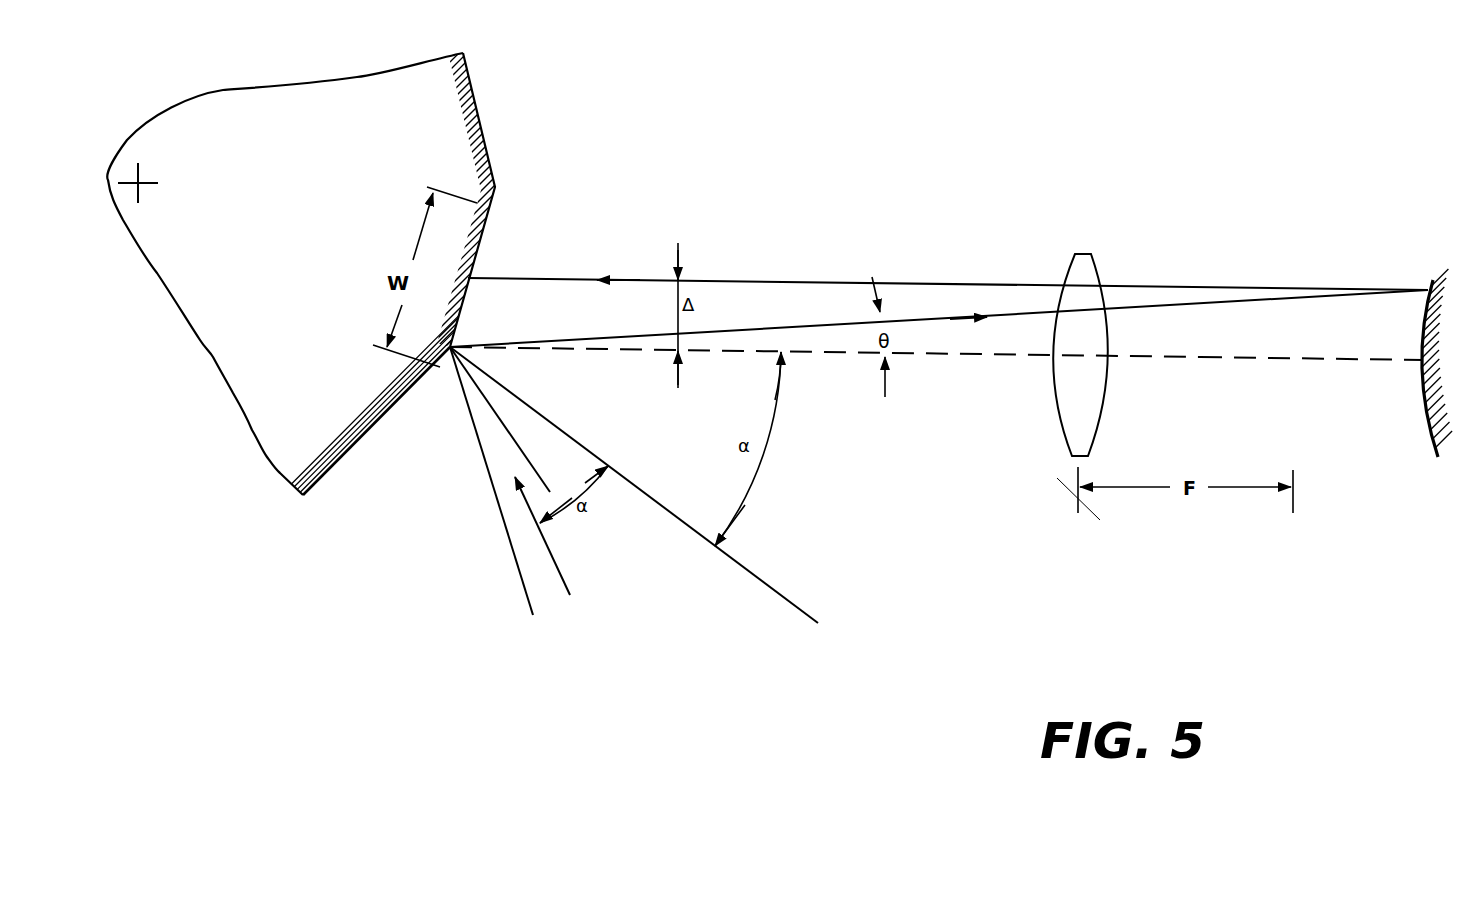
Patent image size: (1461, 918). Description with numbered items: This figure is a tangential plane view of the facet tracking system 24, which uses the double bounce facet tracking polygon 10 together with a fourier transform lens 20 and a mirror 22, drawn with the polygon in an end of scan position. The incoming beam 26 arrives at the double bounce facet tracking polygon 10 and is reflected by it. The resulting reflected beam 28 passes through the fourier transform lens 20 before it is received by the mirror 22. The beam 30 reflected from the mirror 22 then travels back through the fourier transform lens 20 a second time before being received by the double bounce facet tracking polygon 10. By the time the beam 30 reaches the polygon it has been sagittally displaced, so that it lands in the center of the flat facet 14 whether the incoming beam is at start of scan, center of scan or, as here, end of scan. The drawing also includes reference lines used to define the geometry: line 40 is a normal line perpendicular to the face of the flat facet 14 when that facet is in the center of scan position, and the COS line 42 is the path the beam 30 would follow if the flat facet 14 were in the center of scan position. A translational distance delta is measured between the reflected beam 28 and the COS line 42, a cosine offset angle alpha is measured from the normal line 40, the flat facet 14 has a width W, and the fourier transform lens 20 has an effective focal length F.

The double bounce facet tracking polygon 10 is at (527, 173).
The flat facet 14 is at (368, 437).
The fourier transform lens 20 is at (1077, 252).
The mirror 22 is at (1427, 435).
The facet tracking system 24 is at (1192, 243).
The incoming beam 26 is at (560, 572).
The reflected beam 28 is at (957, 355).
The beam reflected from the mirror 30 is at (790, 278).
The normal line 40 is at (793, 602).
The COS line 42 is at (1307, 360).